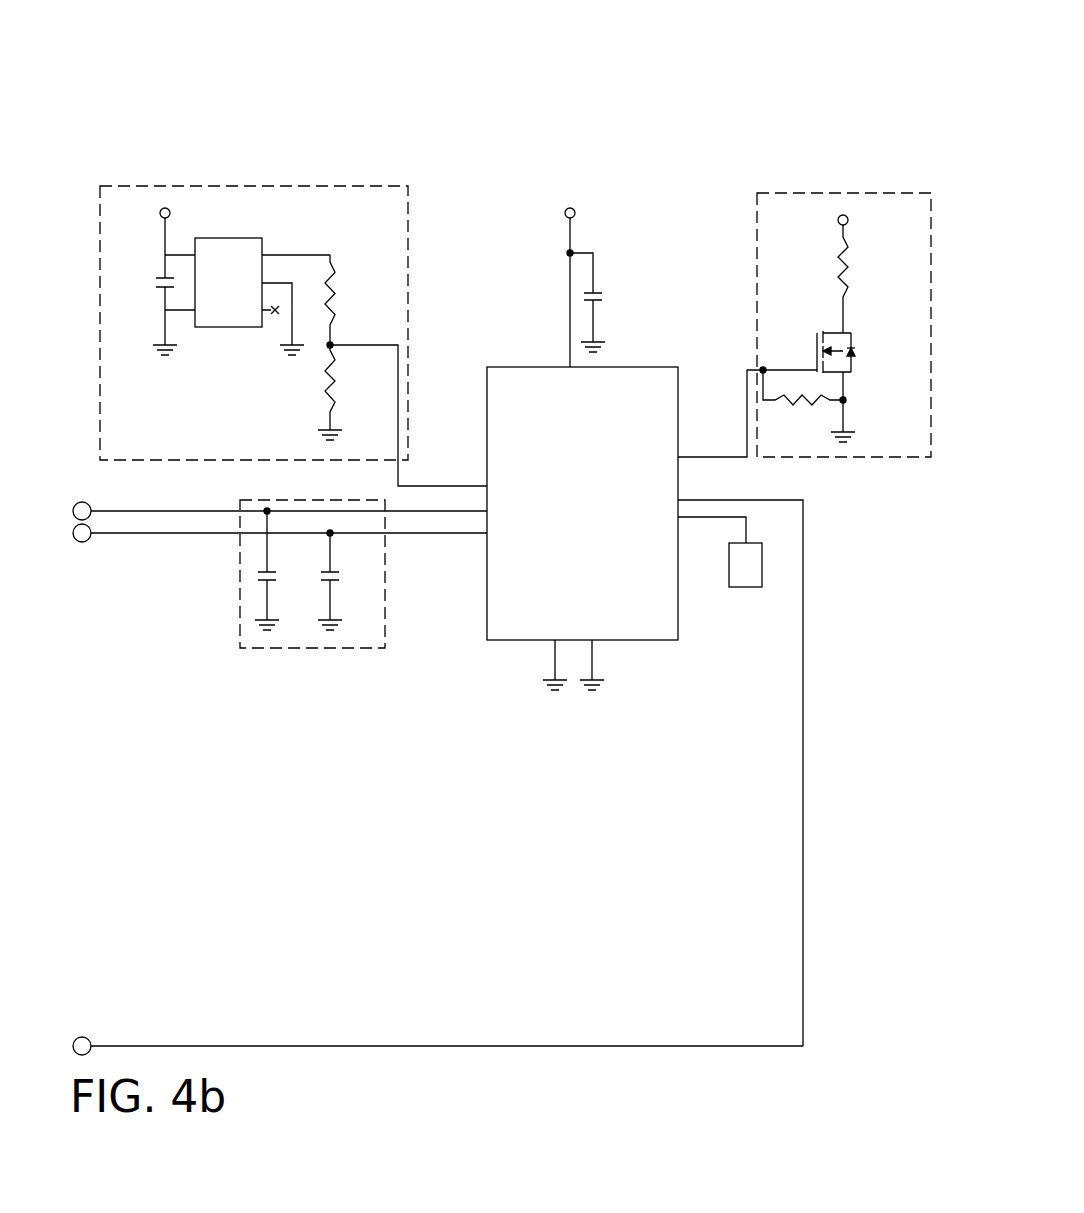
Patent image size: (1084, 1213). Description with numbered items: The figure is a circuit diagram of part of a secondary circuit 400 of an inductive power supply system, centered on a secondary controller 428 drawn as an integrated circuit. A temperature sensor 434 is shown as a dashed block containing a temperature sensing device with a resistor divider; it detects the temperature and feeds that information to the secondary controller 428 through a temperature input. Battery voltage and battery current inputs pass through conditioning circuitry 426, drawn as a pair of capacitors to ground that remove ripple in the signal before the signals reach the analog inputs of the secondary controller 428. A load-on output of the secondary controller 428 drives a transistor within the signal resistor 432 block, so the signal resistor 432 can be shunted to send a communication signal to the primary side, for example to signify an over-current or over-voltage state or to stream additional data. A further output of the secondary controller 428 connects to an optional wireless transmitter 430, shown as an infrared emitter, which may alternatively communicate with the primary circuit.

The secondary circuit 400 is at (444, 47).
The temperature sensor 434 is at (250, 186).
The signal resistor 432 is at (842, 192).
The secondary controller 428 is at (508, 367).
The conditioning circuitry 426 is at (310, 650).
The wireless transmitter 430 is at (743, 590).